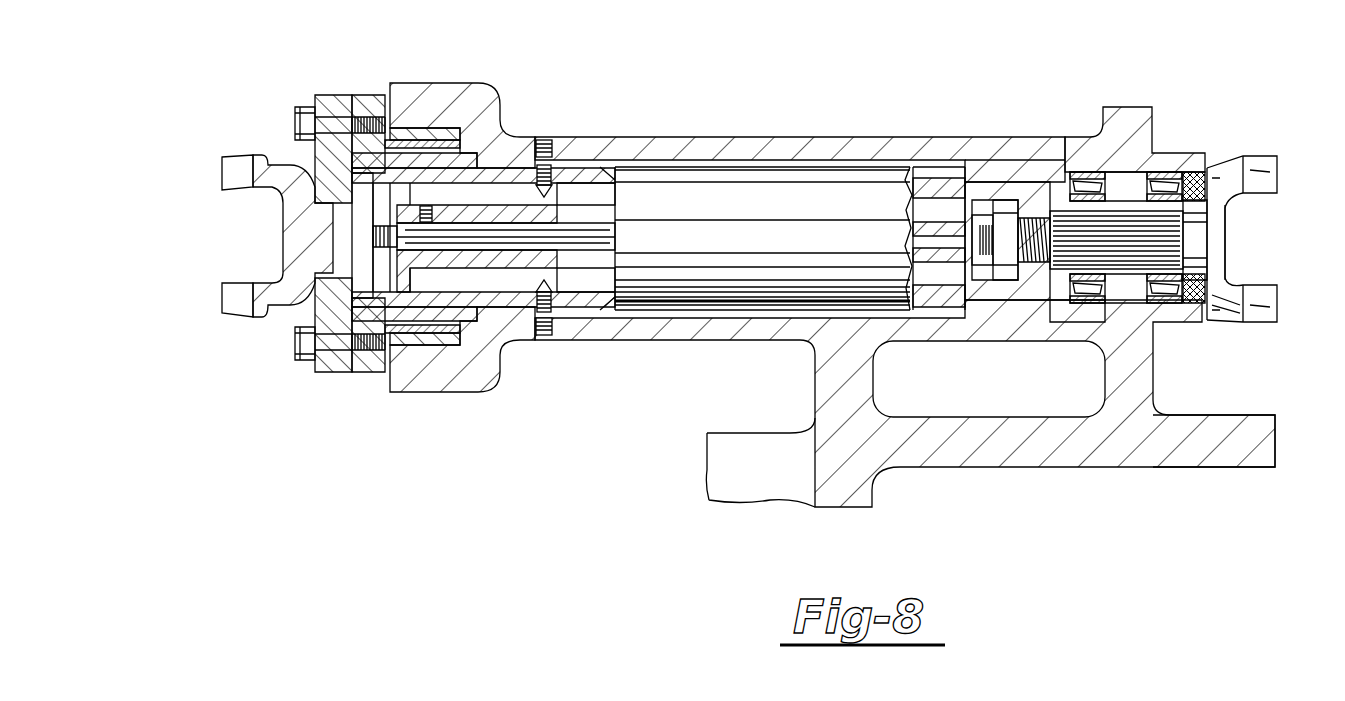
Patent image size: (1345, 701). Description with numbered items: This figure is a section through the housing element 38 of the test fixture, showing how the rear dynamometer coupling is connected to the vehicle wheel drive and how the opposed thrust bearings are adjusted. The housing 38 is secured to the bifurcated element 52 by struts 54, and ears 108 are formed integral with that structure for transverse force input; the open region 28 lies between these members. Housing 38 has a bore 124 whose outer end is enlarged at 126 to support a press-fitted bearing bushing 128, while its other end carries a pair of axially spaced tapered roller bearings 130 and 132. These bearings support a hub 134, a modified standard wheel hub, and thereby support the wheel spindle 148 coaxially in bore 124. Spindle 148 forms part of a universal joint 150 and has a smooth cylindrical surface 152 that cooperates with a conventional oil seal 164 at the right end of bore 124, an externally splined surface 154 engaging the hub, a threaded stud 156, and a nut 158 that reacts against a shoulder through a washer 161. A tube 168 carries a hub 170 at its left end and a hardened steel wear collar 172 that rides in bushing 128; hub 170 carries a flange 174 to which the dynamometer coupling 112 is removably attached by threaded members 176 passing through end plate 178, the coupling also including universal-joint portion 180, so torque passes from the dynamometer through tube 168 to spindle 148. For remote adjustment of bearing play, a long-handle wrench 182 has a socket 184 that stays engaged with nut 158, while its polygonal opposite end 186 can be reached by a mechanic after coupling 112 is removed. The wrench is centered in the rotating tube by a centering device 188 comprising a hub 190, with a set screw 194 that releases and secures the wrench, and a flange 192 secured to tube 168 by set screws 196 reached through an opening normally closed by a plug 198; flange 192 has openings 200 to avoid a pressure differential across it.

The dynamometer coupling 112 is at (228, 203).
The portion of a universal joint 180 is at (237, 312).
The end plate 178 is at (318, 150).
The hub 170 is at (363, 345).
The flange 174 is at (332, 378).
The threaded members 176 is at (304, 107).
The enlarged end 126 is at (415, 374).
The bearing bushing 128 is at (432, 347).
The hardened steel wear collar 172 is at (492, 150).
The bore 124 is at (765, 160).
The housing cavity 28 is at (725, 402).
The struts 54 is at (875, 377).
The bifurcated element 52 is at (1233, 415).
The ears 108 is at (712, 458).
The hub 134 is at (1034, 294).
The hub 190 is at (472, 262).
The set screw 194 is at (428, 208).
The long-handle wrench 182 is at (602, 235).
The centering device 188 is at (562, 262).
The opposite end of wrench 186 is at (347, 232).
The plug 198 is at (546, 140).
The set screws 196 is at (560, 165).
The openings 200 is at (540, 200).
The flange 192 is at (550, 298).
The socket 184 is at (942, 275).
The washer 161 is at (917, 245).
The tube 168 is at (790, 290).
The nut 158 is at (1002, 213).
The threaded stud 156 is at (1036, 222).
The tapered roller bearing 132 is at (1165, 185).
The tapered roller bearing 130 is at (1080, 185).
The oil seal 164 is at (1203, 185).
The externally splined surface 154 is at (1122, 225).
The wheel spindle 148 is at (1193, 236).
The universal joint 150 is at (1246, 205).
The smooth cylindrical surface 152 is at (1197, 266).
The housing element 38 is at (914, 135).